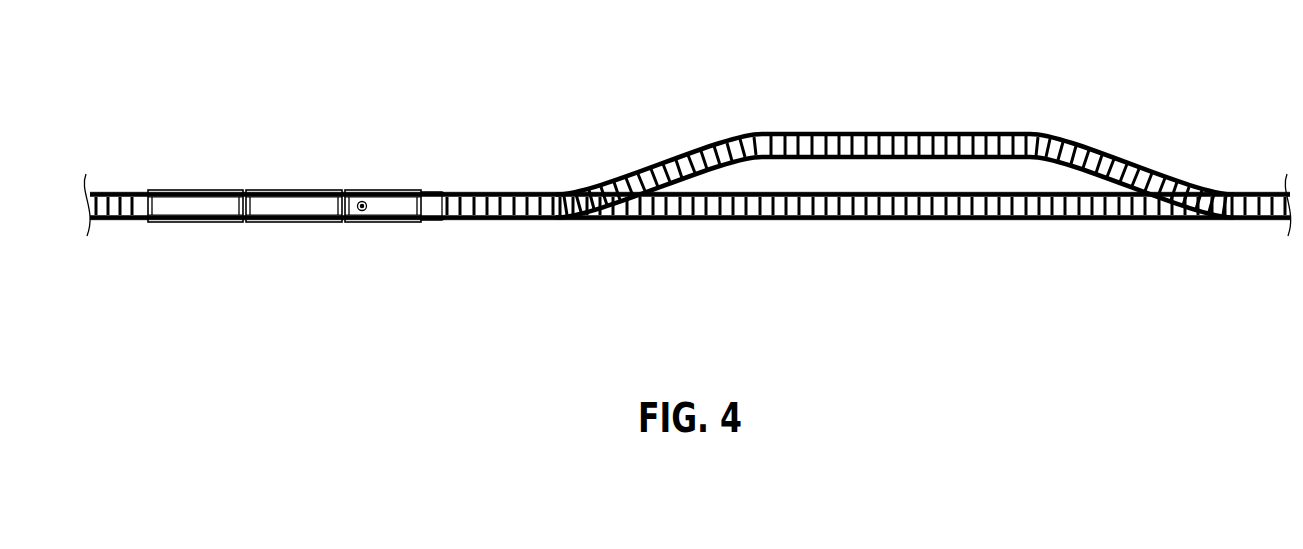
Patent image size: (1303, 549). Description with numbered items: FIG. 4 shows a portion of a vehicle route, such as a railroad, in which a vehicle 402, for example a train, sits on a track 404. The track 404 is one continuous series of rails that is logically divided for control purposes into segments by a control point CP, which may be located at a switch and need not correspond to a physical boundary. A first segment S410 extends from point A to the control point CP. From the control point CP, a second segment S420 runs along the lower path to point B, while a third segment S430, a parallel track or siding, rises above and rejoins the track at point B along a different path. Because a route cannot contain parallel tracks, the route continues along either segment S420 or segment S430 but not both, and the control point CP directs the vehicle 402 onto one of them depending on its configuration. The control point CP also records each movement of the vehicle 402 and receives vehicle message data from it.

The point A is at (112, 207).
The point B is at (1227, 217).
The control point CP is at (567, 208).
The vehicle 402 is at (388, 208).
The track 404 is at (487, 200).
The first segment S410 is at (455, 172).
The second segment S420 is at (980, 245).
The third segment S430 is at (893, 111).